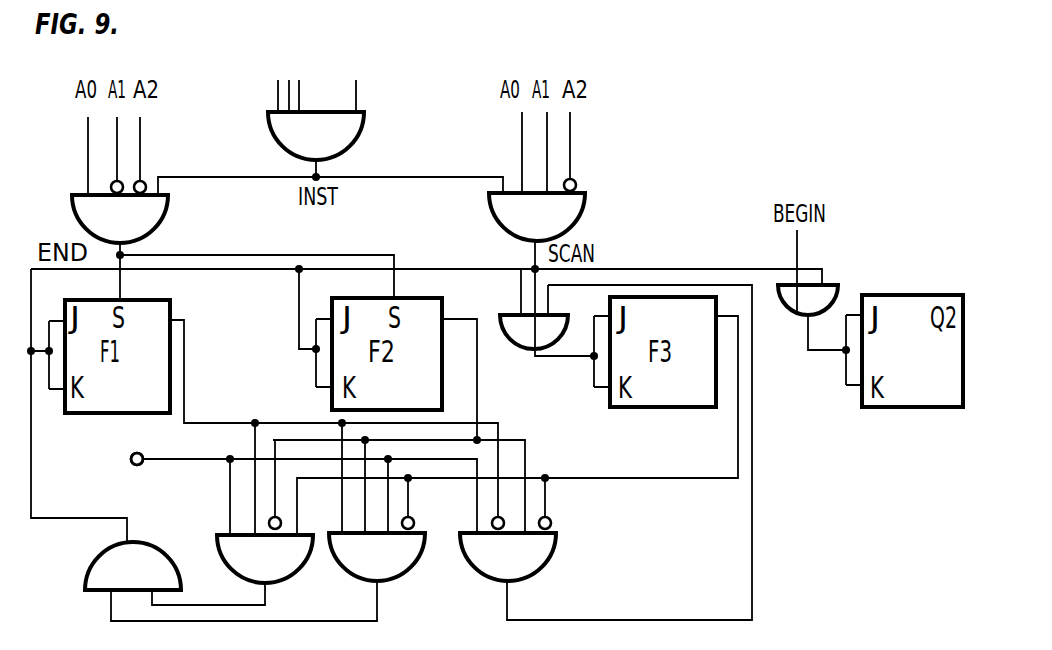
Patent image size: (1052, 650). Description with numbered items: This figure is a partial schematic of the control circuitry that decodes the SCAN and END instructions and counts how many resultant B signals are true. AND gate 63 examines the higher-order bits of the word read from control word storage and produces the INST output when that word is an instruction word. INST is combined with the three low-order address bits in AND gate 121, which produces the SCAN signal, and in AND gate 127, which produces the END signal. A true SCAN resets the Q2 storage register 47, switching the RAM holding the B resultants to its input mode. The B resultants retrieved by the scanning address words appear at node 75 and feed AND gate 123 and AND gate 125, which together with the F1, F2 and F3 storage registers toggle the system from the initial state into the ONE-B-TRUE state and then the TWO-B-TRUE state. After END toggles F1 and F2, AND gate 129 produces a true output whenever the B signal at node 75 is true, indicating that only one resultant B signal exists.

The AND gate 127 is at (128, 227).
The AND gate 63 is at (322, 142).
The AND gate 121 is at (548, 226).
The Q2 storage register 47 is at (920, 367).
The node 75 is at (114, 460).
The AND gate 123 is at (279, 568).
The AND gate 129 is at (392, 566).
The AND gate 125 is at (523, 566).